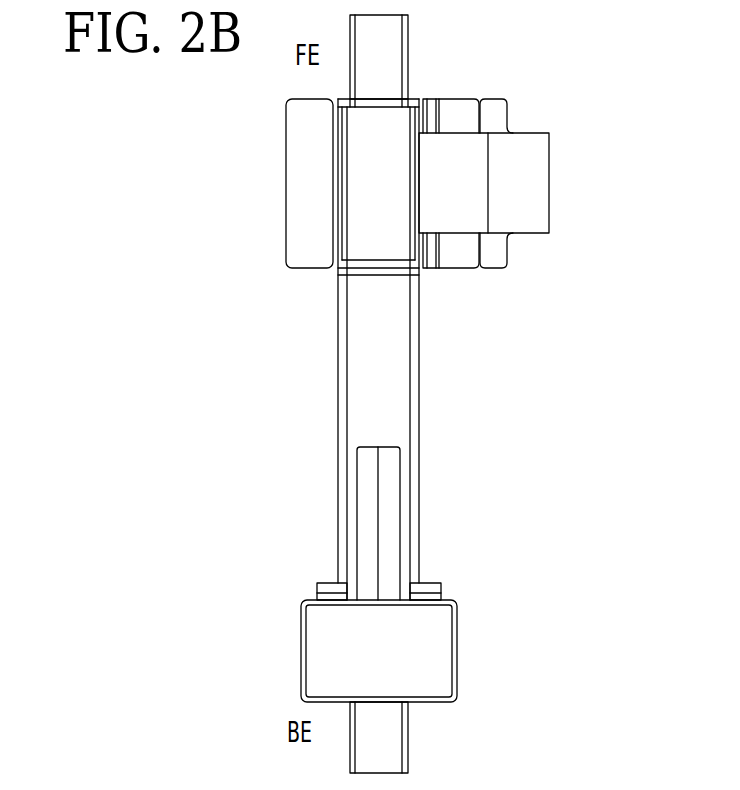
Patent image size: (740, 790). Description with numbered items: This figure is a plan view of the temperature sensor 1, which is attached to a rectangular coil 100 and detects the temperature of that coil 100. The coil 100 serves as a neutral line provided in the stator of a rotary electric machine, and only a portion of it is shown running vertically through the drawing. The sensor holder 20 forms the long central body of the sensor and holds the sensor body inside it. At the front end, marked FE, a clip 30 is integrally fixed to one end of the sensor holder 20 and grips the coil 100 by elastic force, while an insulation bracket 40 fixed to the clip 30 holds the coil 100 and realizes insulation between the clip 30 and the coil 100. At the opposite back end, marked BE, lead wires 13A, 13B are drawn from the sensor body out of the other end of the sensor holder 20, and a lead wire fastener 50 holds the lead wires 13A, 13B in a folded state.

The temperature sensor 1 is at (592, 383).
The coil 100 is at (408, 40).
The sensor holder 20 is at (419, 382).
The insulation bracket 40 is at (286, 190).
The clip 30 is at (549, 180).
The lead wire 13A is at (357, 492).
The lead wire 13B is at (400, 490).
The lead wire fastener 50 is at (457, 660).